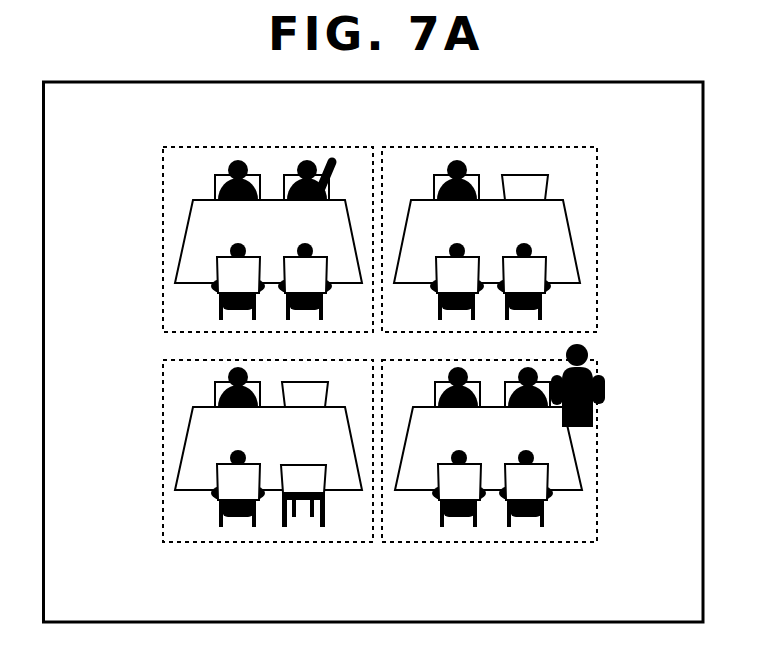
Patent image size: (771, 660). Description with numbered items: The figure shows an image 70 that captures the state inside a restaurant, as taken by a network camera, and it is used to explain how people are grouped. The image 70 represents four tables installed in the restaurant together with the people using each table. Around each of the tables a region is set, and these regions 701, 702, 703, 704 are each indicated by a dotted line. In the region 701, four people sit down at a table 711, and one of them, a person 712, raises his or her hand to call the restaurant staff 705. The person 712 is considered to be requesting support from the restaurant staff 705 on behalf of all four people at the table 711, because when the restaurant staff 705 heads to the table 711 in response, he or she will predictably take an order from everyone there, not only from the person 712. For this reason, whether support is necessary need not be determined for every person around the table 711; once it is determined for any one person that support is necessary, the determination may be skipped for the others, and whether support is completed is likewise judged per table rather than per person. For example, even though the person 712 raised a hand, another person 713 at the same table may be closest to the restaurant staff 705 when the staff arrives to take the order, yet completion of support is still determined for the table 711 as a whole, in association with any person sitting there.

The image 70 is at (638, 81).
The region 701 is at (185, 147).
The region 702 is at (517, 147).
The region 703 is at (183, 545).
The region 704 is at (515, 544).
The restaurant staff 705 is at (585, 349).
The table 711 is at (193, 235).
The person 712 is at (310, 163).
The person 713 is at (231, 249).